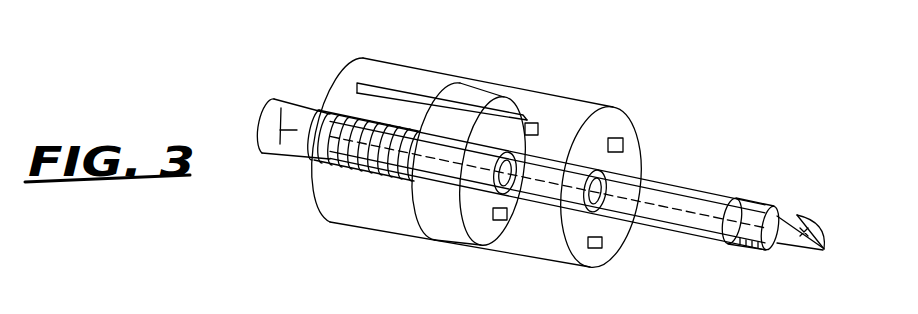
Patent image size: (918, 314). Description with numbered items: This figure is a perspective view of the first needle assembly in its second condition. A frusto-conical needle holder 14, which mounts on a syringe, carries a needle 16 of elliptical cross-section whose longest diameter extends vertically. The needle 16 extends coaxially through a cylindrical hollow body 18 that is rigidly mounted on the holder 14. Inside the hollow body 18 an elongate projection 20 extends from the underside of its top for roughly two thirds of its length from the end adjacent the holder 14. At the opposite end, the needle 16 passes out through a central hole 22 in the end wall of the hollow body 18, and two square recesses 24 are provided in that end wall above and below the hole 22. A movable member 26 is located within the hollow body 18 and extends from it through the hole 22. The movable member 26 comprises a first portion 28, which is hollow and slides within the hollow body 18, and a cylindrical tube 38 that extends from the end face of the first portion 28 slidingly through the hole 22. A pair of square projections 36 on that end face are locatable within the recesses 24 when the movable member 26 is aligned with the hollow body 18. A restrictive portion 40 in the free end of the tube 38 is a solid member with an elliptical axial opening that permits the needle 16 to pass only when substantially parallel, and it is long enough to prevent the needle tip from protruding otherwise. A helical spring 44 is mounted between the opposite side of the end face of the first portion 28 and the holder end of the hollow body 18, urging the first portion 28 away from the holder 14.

The needle holder 14 is at (294, 110).
The needle 16 is at (815, 228).
The hollow body 18 is at (390, 232).
The elongate projection 20 is at (382, 85).
The central hole 22 is at (605, 187).
The square recesses 24 is at (616, 138).
The movable member 26 is at (450, 216).
The first portion 28 is at (475, 95).
The square projections 36 is at (537, 123).
The cylindrical tube 38 is at (713, 188).
The restrictive portion 40 is at (750, 243).
The helical spring 44 is at (330, 165).